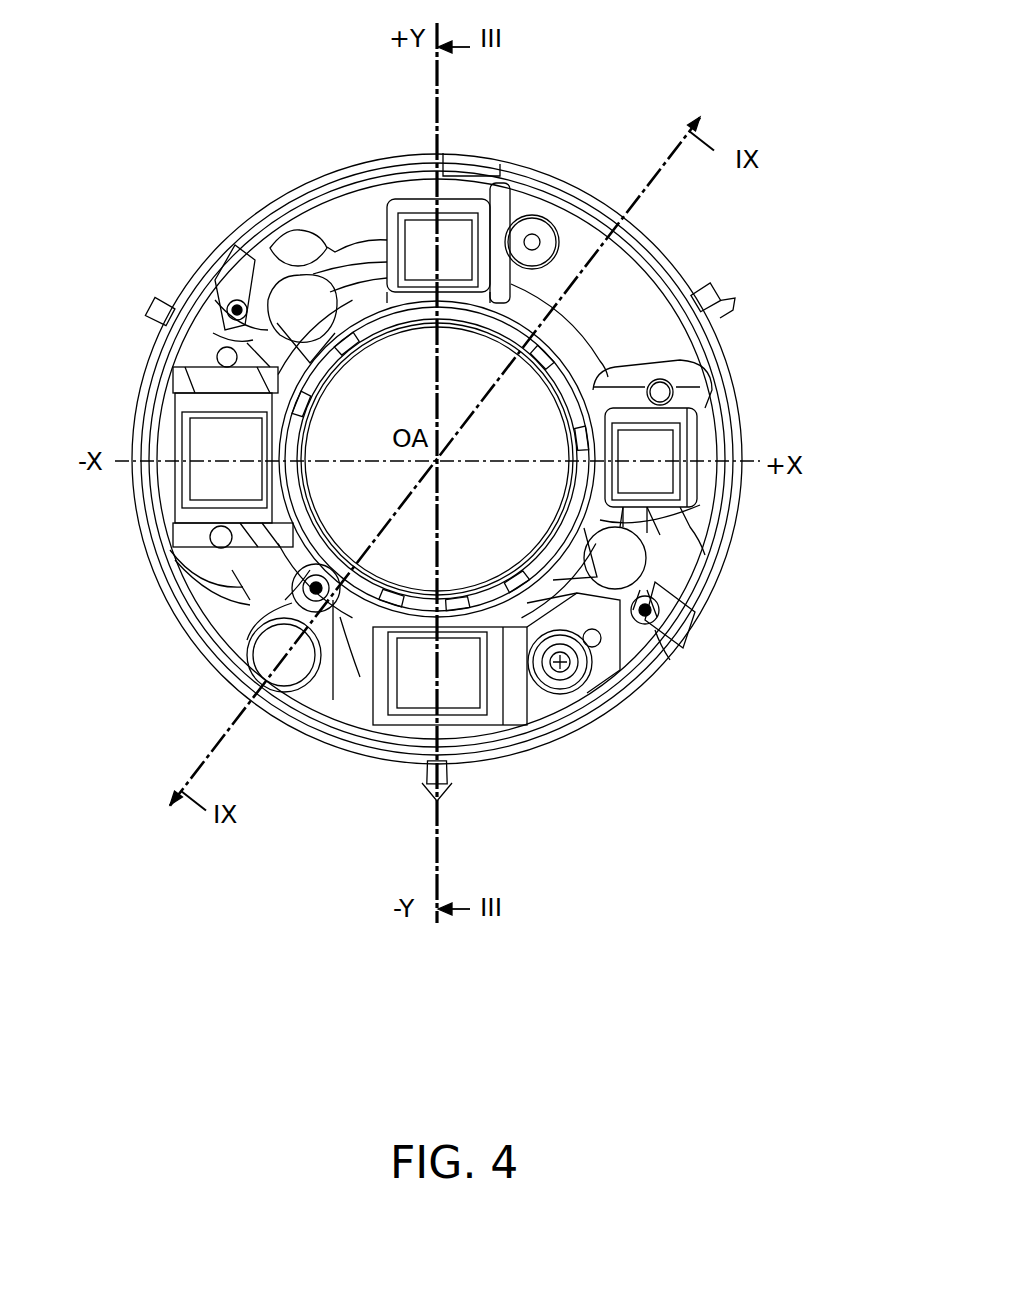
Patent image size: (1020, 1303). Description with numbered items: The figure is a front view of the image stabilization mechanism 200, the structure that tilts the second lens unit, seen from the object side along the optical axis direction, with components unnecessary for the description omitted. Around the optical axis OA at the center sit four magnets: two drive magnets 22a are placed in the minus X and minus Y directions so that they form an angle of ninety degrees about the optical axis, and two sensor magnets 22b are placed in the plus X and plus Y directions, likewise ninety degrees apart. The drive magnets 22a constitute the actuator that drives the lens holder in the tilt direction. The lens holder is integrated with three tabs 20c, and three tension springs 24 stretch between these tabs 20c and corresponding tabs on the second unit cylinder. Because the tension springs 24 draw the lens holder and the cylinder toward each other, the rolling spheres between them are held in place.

The image stabilization mechanism 200 is at (760, 38).
The tabs 20c is at (238, 300).
The drive magnets 22a is at (205, 448).
The sensor magnets 22b is at (455, 237).
The tension springs 24 is at (226, 303).